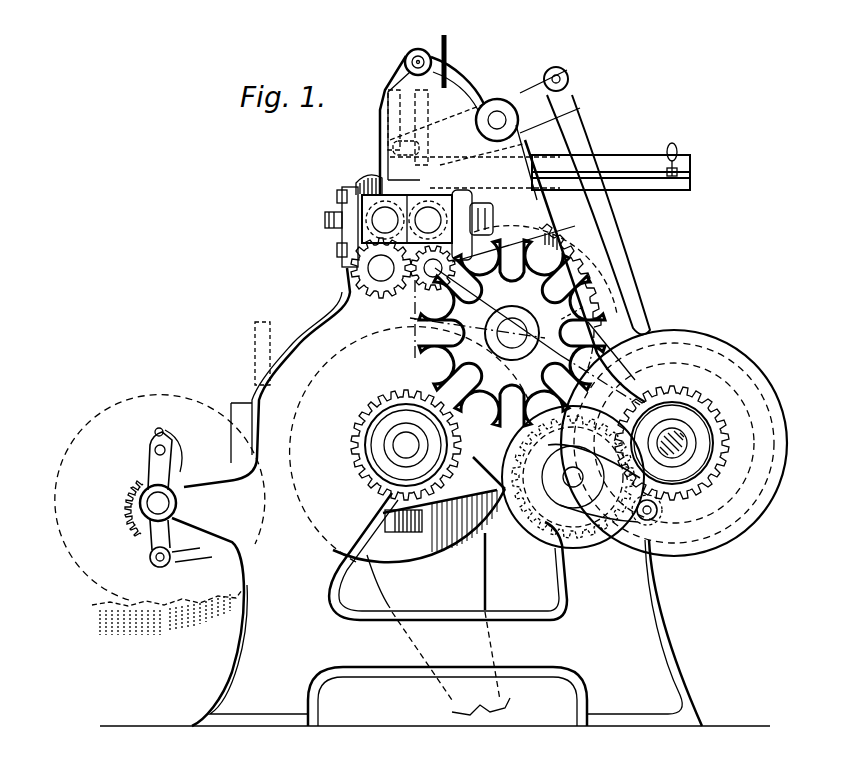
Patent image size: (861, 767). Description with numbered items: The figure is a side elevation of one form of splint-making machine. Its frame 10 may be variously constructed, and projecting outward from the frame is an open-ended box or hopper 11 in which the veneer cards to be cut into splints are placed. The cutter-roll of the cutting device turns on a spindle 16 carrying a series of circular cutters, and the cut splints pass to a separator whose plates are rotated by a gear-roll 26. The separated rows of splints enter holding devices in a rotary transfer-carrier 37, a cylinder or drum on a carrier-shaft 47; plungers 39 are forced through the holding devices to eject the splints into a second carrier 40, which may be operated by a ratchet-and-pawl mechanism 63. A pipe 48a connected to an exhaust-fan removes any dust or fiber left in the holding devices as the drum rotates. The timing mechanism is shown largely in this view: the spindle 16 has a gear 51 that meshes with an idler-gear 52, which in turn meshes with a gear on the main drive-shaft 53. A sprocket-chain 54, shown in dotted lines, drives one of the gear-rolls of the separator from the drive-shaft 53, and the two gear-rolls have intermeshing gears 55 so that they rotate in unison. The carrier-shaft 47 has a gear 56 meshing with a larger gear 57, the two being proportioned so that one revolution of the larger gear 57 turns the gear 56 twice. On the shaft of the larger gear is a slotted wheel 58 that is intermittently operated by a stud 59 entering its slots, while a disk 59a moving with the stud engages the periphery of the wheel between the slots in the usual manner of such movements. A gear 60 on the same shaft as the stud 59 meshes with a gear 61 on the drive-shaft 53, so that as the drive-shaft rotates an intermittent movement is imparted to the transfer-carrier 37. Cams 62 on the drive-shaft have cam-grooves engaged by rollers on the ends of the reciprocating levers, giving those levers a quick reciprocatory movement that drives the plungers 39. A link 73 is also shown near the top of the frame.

The frame 10 is at (467, 92).
The hopper 11 is at (669, 188).
The spindle 16 is at (390, 222).
The gear-roll 26 is at (362, 268).
The transfer-carrier 37 is at (373, 543).
The plungers 39 is at (412, 523).
The second carrier 40 is at (260, 357).
The carrier-shaft 47 is at (400, 447).
The pipe 48a is at (486, 601).
The gear 51 is at (362, 176).
The idler-gear 52 is at (552, 228).
The main drive-shaft 53 is at (685, 453).
The sprocket-chain 54 is at (403, 311).
The intermeshing gears 55 is at (447, 260).
The gear 56 is at (355, 434).
The larger gear 57 is at (410, 371).
The slotted wheel 58 is at (580, 307).
The stud 59 is at (653, 518).
The disk 59a is at (600, 540).
The gear 60 is at (567, 537).
The gear 61 is at (727, 445).
The cams 62 is at (712, 340).
The ratchet-and-pawl mechanism 63 is at (160, 515).
The link 73 is at (412, 185).